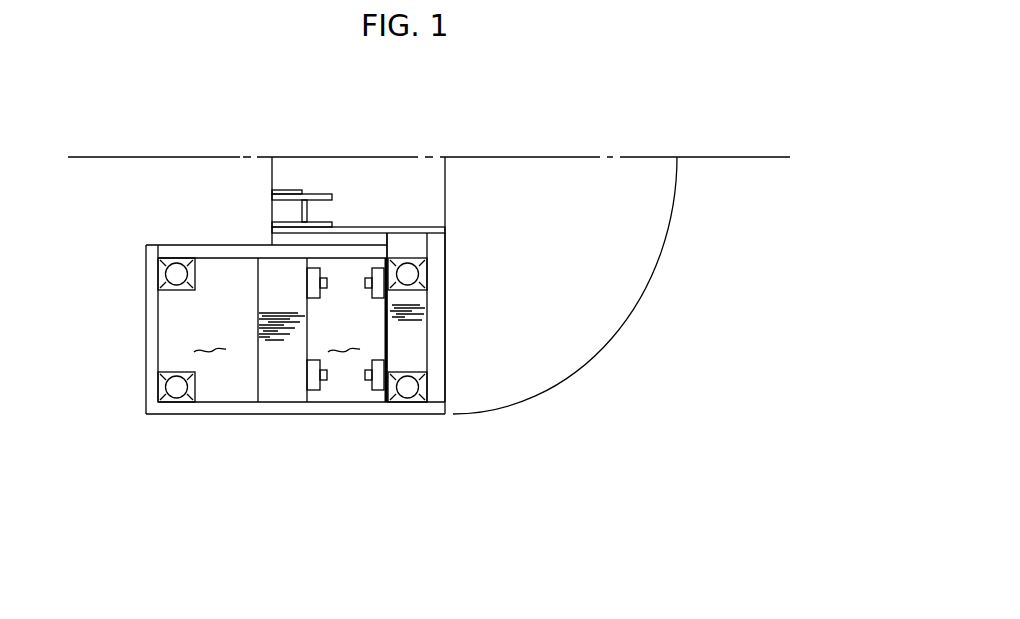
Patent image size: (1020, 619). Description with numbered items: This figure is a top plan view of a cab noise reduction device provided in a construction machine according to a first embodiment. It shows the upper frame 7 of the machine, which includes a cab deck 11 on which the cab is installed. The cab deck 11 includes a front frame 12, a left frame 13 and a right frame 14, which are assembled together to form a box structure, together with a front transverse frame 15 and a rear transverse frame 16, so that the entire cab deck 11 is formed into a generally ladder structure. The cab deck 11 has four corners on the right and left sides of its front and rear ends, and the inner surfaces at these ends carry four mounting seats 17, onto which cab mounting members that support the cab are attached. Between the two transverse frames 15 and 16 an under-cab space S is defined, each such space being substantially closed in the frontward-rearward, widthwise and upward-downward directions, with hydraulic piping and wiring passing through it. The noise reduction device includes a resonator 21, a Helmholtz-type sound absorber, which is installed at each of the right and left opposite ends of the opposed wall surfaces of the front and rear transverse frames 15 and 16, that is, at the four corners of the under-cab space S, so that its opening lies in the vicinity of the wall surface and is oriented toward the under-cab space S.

The upper frame 7 is at (618, 337).
The cab deck 11 is at (295, 305).
The front frame 12 is at (146, 330).
The left frame 13 is at (387, 415).
The right frame 14 is at (228, 245).
The front transverse frame 15 is at (258, 311).
The rear transverse frame 16 is at (427, 340).
The mounting seat 17 is at (173, 258).
The resonator 21 is at (314, 266).